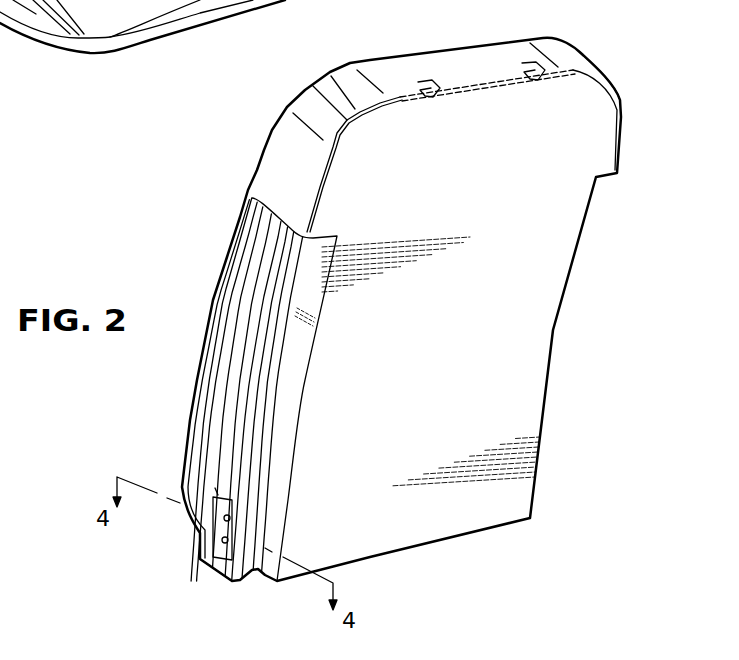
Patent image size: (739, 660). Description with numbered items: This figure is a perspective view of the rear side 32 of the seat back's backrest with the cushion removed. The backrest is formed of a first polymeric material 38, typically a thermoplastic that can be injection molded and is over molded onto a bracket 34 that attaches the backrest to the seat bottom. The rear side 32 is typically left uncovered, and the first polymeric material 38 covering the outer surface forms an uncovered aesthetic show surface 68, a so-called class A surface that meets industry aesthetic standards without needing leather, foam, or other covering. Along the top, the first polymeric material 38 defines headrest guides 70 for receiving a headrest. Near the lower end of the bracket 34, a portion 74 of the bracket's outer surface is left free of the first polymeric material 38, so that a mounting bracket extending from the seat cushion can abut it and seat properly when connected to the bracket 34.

The rear side 32 is at (530, 316).
The bracket 34 is at (220, 505).
The first polymeric material 38 is at (590, 110).
The uncovered aesthetic show surface 68 is at (505, 363).
The headrest guides 70 is at (530, 63).
The portion of the outer surface 74 is at (222, 548).